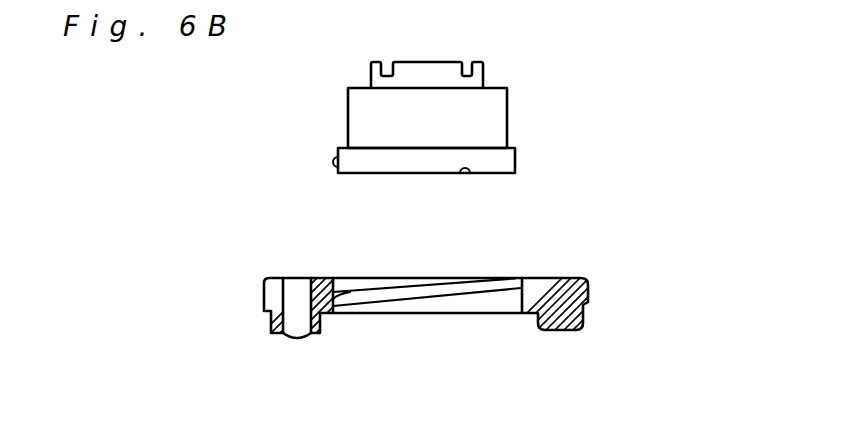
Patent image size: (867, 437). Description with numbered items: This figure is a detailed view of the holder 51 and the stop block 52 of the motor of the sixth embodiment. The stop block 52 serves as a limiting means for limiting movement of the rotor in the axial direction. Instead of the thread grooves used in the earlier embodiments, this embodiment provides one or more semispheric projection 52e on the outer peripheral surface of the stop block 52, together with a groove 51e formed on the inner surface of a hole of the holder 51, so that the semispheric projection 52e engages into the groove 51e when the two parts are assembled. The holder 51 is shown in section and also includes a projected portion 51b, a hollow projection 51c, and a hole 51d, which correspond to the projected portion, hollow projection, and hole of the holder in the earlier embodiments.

The stop block 52 is at (467, 112).
The semispheric projection 52e is at (330, 162).
The holder 51 is at (557, 280).
The projected portion 51b is at (568, 323).
The hollow projection 51c is at (271, 314).
The hole 51d is at (293, 288).
The groove 51e is at (370, 293).